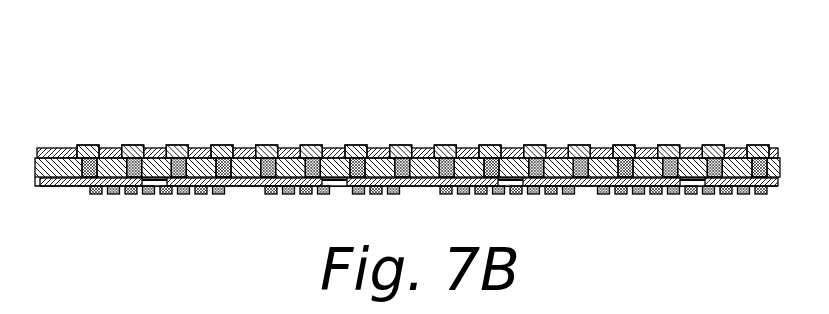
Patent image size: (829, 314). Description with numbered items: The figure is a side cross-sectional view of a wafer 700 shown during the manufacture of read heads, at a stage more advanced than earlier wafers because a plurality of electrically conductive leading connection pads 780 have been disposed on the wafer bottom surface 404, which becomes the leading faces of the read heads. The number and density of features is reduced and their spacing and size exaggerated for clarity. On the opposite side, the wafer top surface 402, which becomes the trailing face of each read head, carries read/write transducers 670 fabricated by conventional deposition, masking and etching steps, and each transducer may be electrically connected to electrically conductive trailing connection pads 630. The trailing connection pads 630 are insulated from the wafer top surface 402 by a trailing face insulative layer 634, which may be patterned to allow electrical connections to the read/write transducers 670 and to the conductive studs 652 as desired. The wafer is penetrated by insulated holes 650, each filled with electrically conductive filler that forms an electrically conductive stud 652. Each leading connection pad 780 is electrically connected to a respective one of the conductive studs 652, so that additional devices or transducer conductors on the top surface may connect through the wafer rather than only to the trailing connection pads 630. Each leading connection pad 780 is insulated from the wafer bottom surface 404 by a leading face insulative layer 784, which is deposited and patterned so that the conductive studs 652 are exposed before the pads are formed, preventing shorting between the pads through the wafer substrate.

The wafer 700 is at (448, 118).
The leading face insulative layer 784 is at (60, 150).
The electrically conductive leading connection pads 780 is at (167, 148).
The wafer bottom surface 404 is at (733, 148).
The trailing face insulative layer 634 is at (57, 183).
The read/write transducers 670 is at (335, 196).
The electrically conductive trailing connection pads 630 is at (158, 196).
The insulated holes 650 is at (605, 195).
The electrically conductive studs 652 is at (621, 195).
The wafer top surface 402 is at (733, 195).